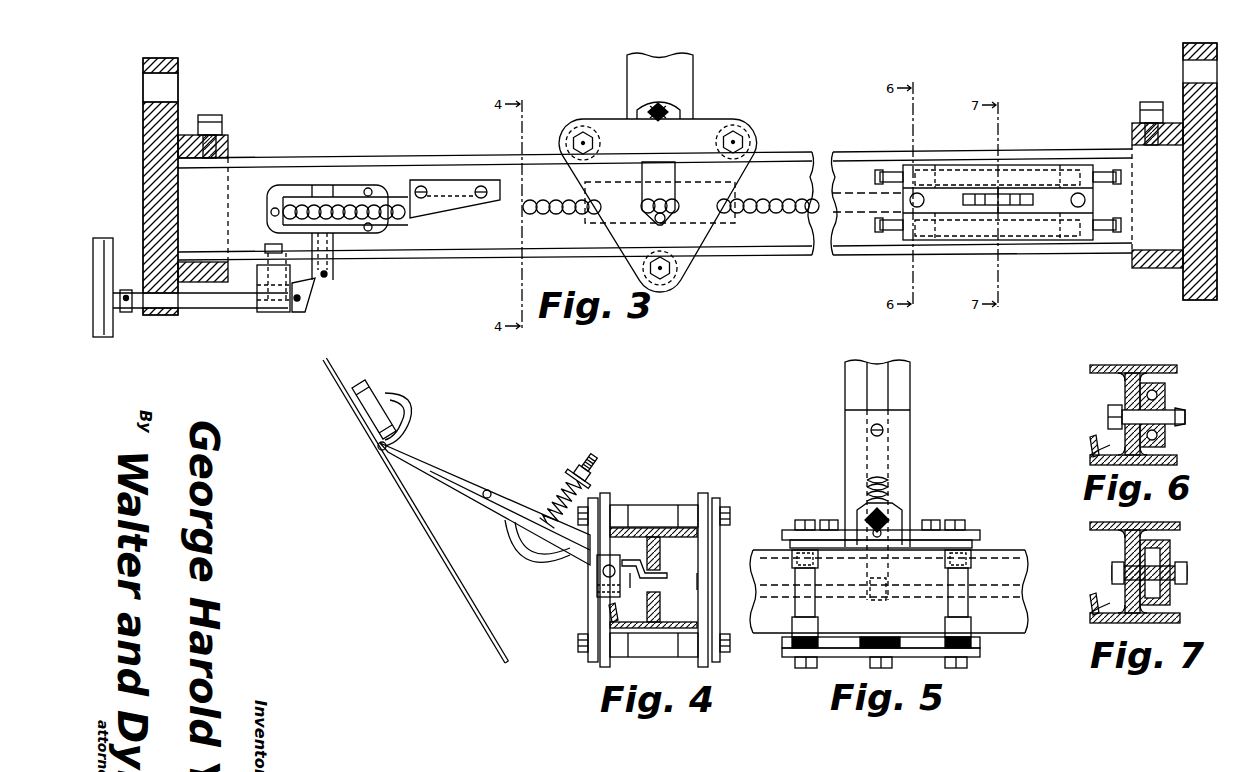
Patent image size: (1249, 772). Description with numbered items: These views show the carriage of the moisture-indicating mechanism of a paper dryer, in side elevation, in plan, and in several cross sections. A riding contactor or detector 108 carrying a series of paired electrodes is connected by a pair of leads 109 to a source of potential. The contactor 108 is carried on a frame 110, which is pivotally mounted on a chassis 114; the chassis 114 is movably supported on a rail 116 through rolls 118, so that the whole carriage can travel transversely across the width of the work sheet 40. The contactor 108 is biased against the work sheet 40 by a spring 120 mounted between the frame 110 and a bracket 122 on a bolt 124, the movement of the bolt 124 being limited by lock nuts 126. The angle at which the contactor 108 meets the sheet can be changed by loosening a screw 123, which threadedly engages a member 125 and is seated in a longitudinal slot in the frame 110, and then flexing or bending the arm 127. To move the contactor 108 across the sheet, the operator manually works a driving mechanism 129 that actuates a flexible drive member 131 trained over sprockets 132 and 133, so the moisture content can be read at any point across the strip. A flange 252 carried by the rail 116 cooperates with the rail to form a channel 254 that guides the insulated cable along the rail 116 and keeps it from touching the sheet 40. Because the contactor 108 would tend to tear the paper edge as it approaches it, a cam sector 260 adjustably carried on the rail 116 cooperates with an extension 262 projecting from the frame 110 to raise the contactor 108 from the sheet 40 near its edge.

In FIG. 4, the work sheet 40 is at (446, 575).
In FIG. 4, the riding contactor 108 is at (368, 390).
In FIG. 4, the leads 109 is at (407, 414).
In FIG. 4, the frame 110 is at (520, 550).
In FIG. 3, the chassis 114 is at (700, 140).
In FIG. 4, the chassis 114 is at (601, 508).
In FIG. 5, the chassis 114 is at (965, 534).
In FIG. 3, the rail 116 is at (792, 155).
In FIG. 4, the rail 116 is at (672, 527).
In FIG. 5, the rail 116 is at (1023, 562).
In FIG. 6, the rail 116 is at (1175, 365).
In FIG. 7, the rail 116 is at (1160, 522).
In FIG. 3, the rolls 118 is at (572, 125).
In FIG. 4, the rolls 118 is at (698, 493).
In FIG. 5, the rolls 118 is at (796, 560).
In FIG. 4, the spring 120 is at (550, 509).
In FIG. 5, the spring 120 is at (893, 490).
In FIG. 3, the bracket 122 is at (680, 122).
In FIG. 4, the bracket 122 is at (570, 475).
In FIG. 4, the screw 123 is at (487, 490).
In FIG. 3, the bolt 124 is at (660, 109).
In FIG. 4, the bolt 124 is at (594, 459).
In FIG. 4, the member 125 is at (452, 487).
In FIG. 3, the lock nuts 126 is at (676, 116).
In FIG. 4, the lock nuts 126 is at (585, 484).
In FIG. 4, the arm 127 is at (382, 450).
In FIG. 3, the driving mechanism 129 is at (239, 300).
In FIG. 3, the flexible drive member 131 is at (394, 221).
In FIG. 4, the flexible drive member 131 is at (697, 590).
In FIG. 6, the flexible drive member 131 is at (1180, 414).
In FIG. 7, the flexible drive member 131 is at (1187, 574).
In FIG. 3, the sprocket 132 is at (355, 192).
In FIG. 3, the sprocket 133 is at (1029, 213).
In FIG. 6, the sprocket 133 is at (1174, 430).
In FIG. 7, the sprocket 133 is at (1170, 588).
In FIG. 4, the flange 252 is at (615, 615).
In FIG. 6, the flange 252 is at (1090, 447).
In FIG. 7, the flange 252 is at (1090, 610).
In FIG. 6, the channel 254 is at (1108, 440).
In FIG. 7, the channel 254 is at (1107, 602).
In FIG. 3, the cam sector 260 is at (450, 180).
In FIG. 4, the extension 262 is at (664, 576).